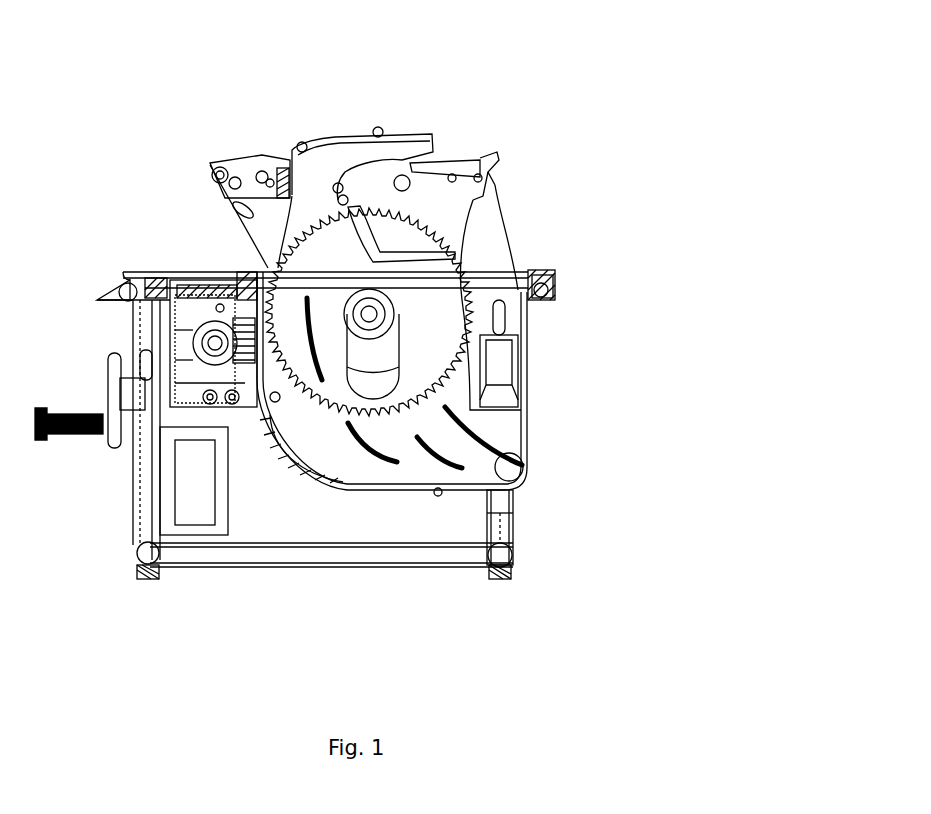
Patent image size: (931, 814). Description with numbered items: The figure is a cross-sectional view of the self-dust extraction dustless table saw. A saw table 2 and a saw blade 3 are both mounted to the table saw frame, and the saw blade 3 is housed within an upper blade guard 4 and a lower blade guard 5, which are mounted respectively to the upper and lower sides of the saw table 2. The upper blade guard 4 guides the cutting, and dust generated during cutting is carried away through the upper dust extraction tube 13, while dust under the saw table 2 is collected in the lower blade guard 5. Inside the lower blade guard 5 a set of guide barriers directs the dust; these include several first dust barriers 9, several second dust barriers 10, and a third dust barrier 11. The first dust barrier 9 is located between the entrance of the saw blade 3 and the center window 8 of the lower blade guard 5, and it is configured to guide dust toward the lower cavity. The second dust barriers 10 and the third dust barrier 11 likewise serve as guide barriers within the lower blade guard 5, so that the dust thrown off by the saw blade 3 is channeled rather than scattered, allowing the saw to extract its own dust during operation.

The saw table 2 is at (555, 272).
The saw blade 3 is at (445, 338).
The upper blade guard 4 is at (331, 147).
The lower blade guard 5 is at (517, 420).
The center window 8 is at (372, 343).
The first dust barrier 9 is at (223, 270).
The second dust barrier 10 is at (378, 443).
The third dust barrier 11 is at (520, 487).
The upper dust extraction tube 13 is at (437, 143).